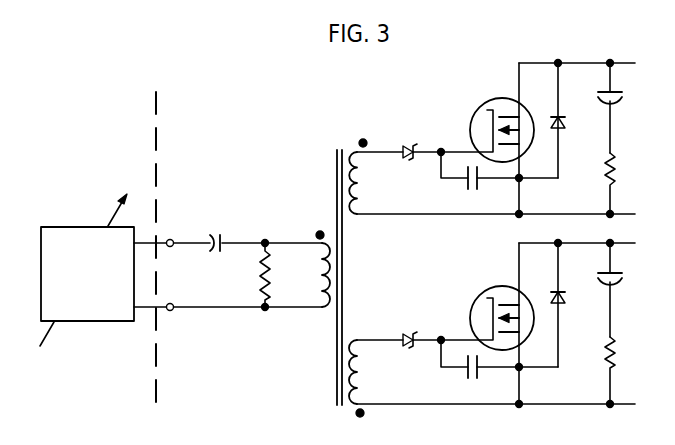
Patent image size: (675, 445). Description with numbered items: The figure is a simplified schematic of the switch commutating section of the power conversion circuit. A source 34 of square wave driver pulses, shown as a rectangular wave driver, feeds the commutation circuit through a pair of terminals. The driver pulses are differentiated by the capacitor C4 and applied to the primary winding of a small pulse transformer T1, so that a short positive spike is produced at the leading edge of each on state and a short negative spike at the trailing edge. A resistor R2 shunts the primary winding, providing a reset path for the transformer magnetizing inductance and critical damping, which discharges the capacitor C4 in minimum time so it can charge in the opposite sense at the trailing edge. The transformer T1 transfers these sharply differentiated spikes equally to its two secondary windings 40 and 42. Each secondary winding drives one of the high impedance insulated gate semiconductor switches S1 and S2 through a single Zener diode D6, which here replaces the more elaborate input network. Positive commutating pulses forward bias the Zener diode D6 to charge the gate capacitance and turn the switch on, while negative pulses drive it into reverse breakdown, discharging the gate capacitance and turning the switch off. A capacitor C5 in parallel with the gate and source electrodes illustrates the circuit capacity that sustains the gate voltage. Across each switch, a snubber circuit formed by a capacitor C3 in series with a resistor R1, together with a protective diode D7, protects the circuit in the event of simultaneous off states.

The source of square wave driver pulses 34 is at (88, 328).
The secondary winding 40 is at (366, 185).
The secondary winding 42 is at (366, 374).
The pulse transformer T1 is at (332, 262).
The capacitor C4 is at (217, 228).
The resistor R2 is at (249, 275).
The Zener diode D6 is at (420, 231).
The capacitor C5 is at (498, 272).
The switch S1 is at (487, 140).
The switch S2 is at (487, 325).
The protective diode D7 is at (570, 214).
The snubber capacitor C3 is at (618, 199).
The snubber resistor R1 is at (623, 280).